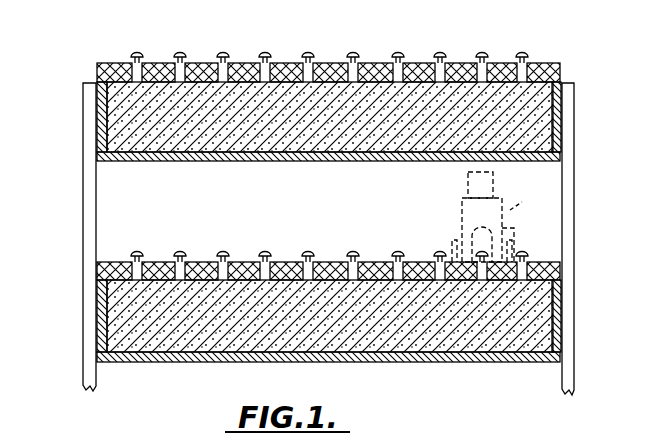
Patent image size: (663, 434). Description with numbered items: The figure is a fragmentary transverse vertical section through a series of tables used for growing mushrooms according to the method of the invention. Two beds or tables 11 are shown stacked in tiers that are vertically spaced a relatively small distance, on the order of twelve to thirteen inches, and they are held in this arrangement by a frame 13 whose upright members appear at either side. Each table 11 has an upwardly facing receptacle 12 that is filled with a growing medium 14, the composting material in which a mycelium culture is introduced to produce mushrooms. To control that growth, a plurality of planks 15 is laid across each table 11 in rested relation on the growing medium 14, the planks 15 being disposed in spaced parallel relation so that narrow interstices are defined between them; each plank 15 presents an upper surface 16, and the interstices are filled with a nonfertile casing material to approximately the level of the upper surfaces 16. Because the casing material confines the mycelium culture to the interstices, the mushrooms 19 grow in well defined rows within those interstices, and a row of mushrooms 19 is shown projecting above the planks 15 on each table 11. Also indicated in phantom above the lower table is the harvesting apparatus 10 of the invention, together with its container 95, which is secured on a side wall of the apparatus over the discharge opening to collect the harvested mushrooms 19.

The apparatus 10 is at (460, 195).
The table 11 is at (286, 158).
The receptacle 12 is at (118, 97).
The frame 13 is at (88, 201).
The growing medium 14 is at (224, 125).
The plank 15 is at (293, 63).
The upper surface 16 is at (378, 63).
The mushroom 19 is at (523, 54).
The container 95 is at (512, 214).